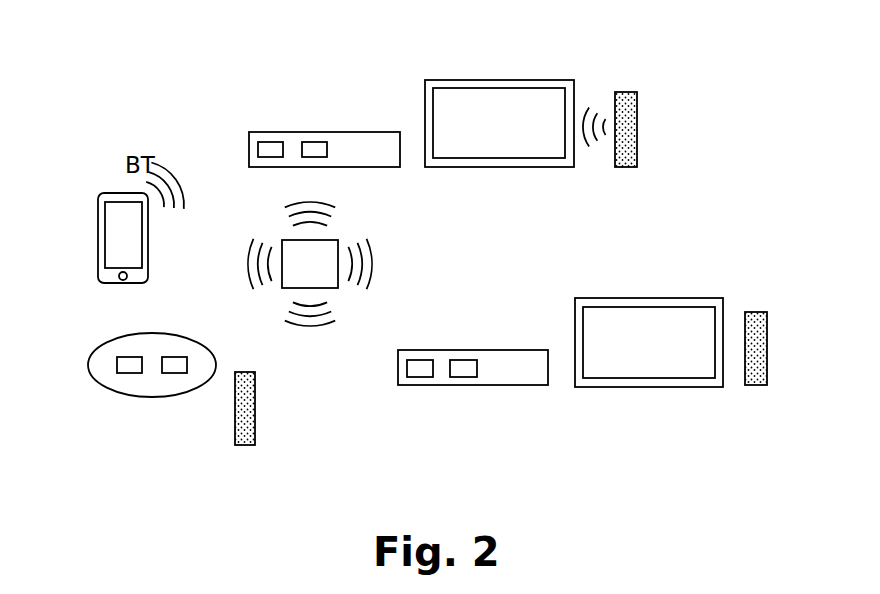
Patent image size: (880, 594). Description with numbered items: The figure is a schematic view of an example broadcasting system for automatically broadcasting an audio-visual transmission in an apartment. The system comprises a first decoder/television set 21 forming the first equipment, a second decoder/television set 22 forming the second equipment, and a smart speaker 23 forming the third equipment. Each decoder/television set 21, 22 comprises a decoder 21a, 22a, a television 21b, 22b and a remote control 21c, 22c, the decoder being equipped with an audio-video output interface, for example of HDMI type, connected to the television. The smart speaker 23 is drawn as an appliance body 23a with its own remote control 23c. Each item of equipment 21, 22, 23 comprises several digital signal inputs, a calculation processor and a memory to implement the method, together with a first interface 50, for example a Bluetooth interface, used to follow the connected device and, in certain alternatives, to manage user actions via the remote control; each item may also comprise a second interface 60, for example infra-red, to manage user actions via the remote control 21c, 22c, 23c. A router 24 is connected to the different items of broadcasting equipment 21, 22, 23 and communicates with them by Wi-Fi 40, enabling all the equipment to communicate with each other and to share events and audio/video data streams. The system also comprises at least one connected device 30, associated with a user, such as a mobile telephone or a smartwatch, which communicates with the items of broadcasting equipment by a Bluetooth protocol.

The first decoder/television set 21 is at (485, 89).
The decoder 21a is at (366, 132).
The television 21b is at (520, 80).
The remote control 21c is at (637, 128).
The second decoder/television set 22 is at (611, 285).
The decoder 22a is at (507, 350).
The television 22b is at (677, 298).
The remote control 22c is at (767, 340).
The smart speaker 23 is at (186, 417).
The home appliance 23a is at (152, 397).
The remote control 23c is at (255, 422).
The router 24 is at (327, 277).
The connected device 30 is at (98, 243).
The Wi-Fi 40 is at (354, 254).
The first interface 50 is at (318, 142).
The second interface 60 is at (270, 142).